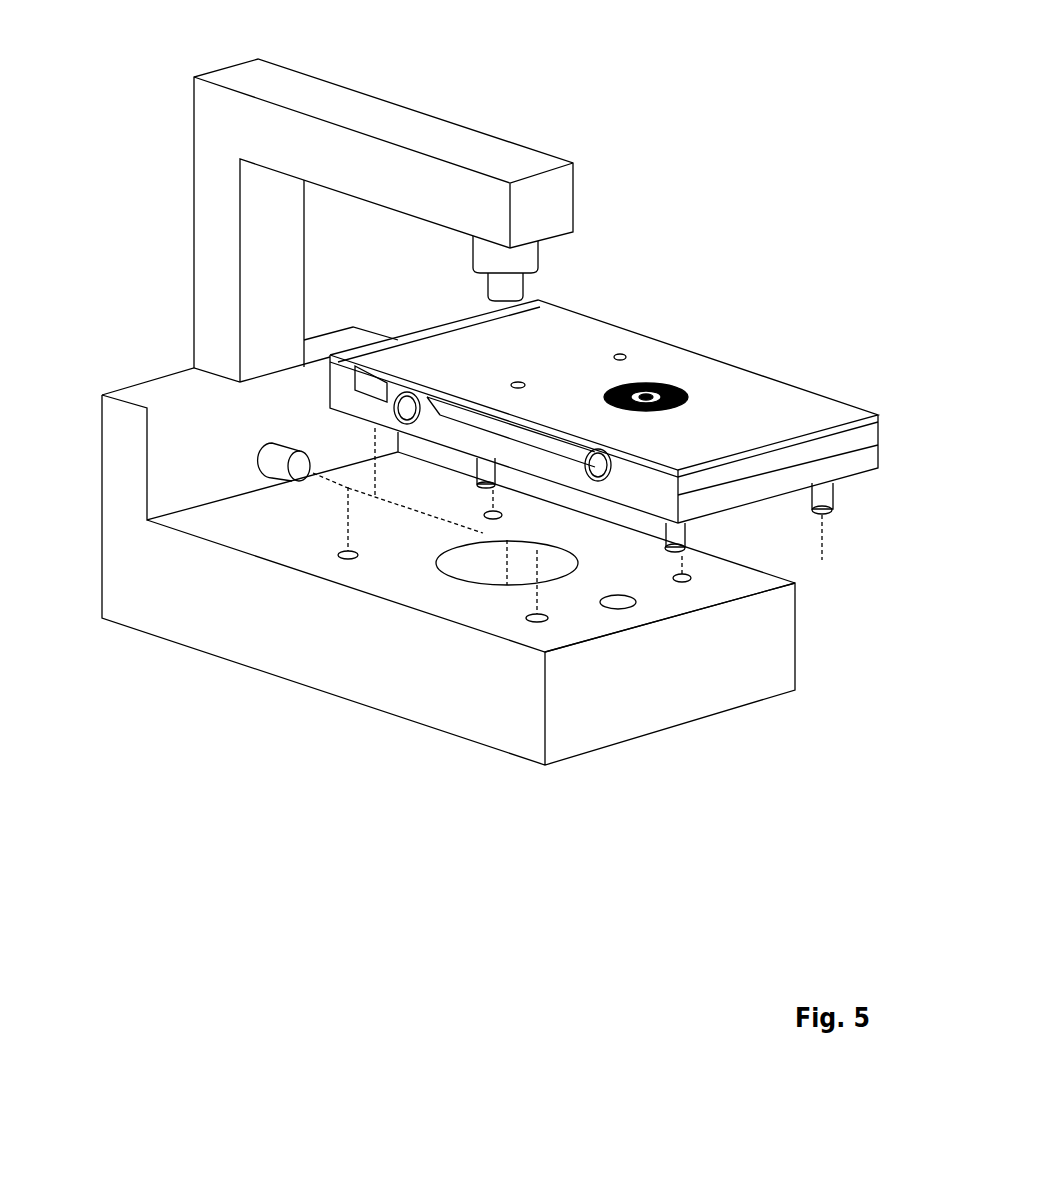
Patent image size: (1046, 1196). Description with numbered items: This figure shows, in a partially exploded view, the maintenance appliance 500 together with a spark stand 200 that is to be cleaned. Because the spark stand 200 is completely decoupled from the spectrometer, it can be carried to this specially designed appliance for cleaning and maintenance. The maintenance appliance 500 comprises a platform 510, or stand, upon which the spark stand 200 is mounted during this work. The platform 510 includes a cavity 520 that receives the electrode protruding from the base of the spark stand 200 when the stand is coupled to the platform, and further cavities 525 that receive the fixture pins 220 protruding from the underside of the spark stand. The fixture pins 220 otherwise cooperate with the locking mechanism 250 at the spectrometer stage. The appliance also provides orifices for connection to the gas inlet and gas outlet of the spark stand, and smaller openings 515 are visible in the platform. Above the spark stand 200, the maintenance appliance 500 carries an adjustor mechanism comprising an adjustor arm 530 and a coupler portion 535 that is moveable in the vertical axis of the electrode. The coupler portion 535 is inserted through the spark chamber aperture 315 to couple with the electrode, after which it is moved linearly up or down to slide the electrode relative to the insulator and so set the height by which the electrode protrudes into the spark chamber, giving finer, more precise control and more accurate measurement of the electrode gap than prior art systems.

The maintenance appliance 500 is at (138, 228).
The adjustor arm 530 is at (380, 117).
The coupler portion 535 is at (532, 257).
The spark stand 200 is at (577, 340).
The spark chamber aperture 315 is at (680, 388).
The fixture pins 220 is at (837, 477).
The locking mechanism 250 is at (610, 490).
The platform 510 is at (760, 582).
The locating holes 515 is at (348, 566).
The cavity 520 is at (470, 597).
The cavities 525 is at (617, 612).